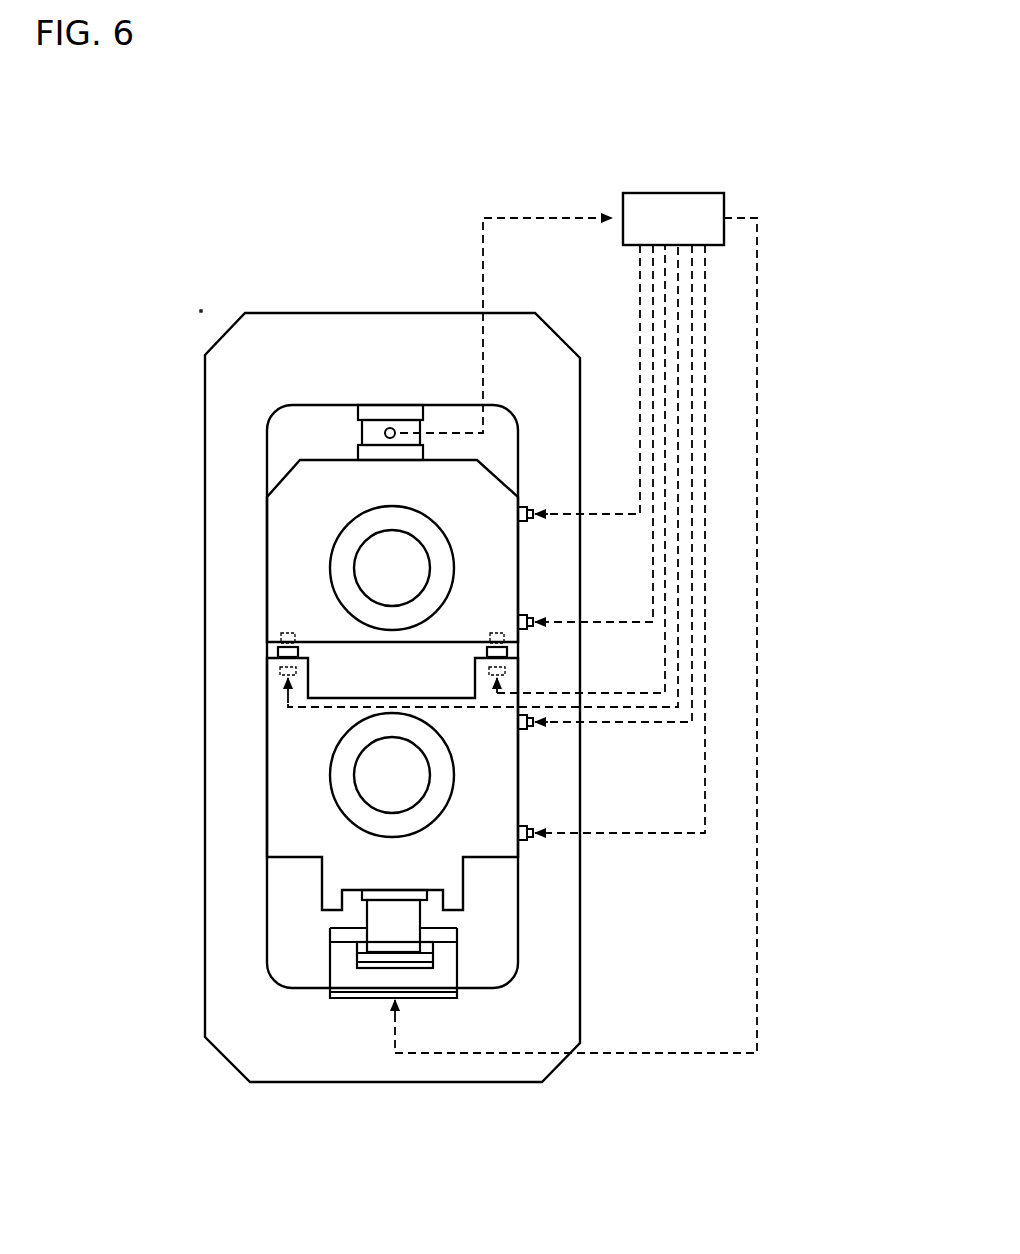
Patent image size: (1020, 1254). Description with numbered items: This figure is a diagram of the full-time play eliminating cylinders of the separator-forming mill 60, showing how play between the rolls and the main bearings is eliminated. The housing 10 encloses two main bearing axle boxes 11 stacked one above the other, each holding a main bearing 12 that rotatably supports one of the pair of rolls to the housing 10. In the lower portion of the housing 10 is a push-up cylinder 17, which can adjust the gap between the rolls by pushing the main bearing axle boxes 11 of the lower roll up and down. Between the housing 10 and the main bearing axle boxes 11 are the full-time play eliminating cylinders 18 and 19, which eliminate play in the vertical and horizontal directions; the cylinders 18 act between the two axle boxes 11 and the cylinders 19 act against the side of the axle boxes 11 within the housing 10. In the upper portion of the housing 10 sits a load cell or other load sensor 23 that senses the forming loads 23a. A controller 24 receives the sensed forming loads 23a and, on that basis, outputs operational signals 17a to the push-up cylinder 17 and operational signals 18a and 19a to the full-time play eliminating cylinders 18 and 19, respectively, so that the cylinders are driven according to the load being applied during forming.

The separator-forming mill 60 is at (312, 198).
The housing 10 is at (252, 333).
The main bearing axle boxes 11 is at (280, 540).
The main bearings 12 is at (340, 590).
The push-up cylinders 17 is at (326, 957).
The operational signals 17a is at (652, 1055).
The full-time play eliminating cylinders 18 is at (268, 670).
The operational signals 18a is at (652, 688).
The full-time play eliminating cylinders 19 is at (531, 502).
The operational signals 19a is at (640, 350).
The load sensors 23 is at (358, 433).
The forming loads 23a is at (520, 217).
The controller 24 is at (674, 193).